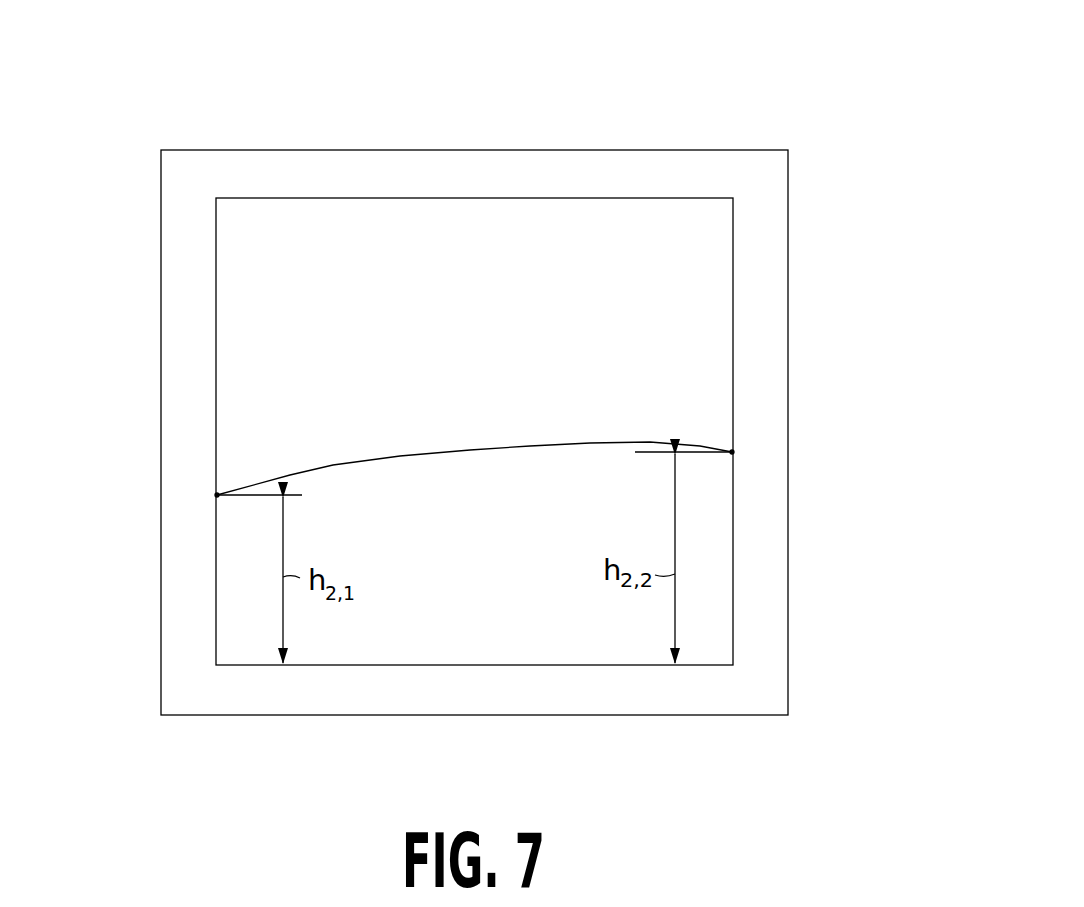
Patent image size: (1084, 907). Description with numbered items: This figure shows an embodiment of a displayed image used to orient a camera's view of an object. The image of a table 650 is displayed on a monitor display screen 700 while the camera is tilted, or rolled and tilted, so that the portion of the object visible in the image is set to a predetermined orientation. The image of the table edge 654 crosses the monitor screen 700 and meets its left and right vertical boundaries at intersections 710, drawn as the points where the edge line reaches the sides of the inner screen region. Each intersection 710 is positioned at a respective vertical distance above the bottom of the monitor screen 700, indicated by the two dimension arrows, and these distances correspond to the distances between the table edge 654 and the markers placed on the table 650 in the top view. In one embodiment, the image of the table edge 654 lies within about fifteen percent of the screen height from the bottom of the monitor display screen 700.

The monitor display screen 700 is at (722, 112).
The table 650 is at (533, 571).
The table edge 654 is at (333, 465).
The intersections 710 is at (813, 457).